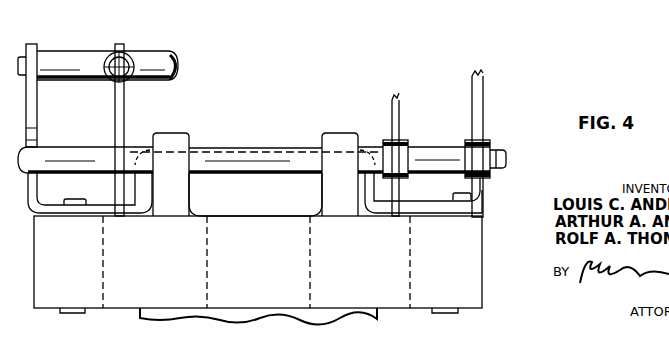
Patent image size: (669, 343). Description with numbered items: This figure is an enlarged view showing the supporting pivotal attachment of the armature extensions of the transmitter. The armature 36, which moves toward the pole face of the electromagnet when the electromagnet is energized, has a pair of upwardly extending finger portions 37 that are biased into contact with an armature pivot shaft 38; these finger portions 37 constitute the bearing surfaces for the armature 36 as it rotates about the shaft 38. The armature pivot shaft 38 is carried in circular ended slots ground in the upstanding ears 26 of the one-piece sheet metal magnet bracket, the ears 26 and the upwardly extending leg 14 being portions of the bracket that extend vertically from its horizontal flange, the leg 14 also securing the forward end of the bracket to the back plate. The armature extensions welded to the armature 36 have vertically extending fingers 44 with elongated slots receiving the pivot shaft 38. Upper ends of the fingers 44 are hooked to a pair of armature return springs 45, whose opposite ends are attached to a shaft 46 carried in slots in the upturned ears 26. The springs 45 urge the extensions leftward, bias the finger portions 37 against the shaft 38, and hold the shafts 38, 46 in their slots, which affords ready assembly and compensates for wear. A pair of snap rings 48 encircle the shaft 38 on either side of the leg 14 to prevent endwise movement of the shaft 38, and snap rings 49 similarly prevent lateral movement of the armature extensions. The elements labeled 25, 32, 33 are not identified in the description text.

The upwardly extending leg 14 is at (472, 82).
The pad 25 is at (103, 201).
The upstanding ears 26 is at (37, 116).
The bracket 32 is at (70, 206).
The bracket 33 is at (481, 195).
The armature 36 is at (483, 240).
The finger portions 37 is at (180, 133).
The armature pivot shaft 38 is at (222, 149).
The vertically extending fingers 44 is at (124, 104).
The armature return springs 45 is at (131, 58).
The shaft 46 is at (69, 53).
The snap rings 48 is at (464, 140).
The snap rings 49 is at (384, 138).